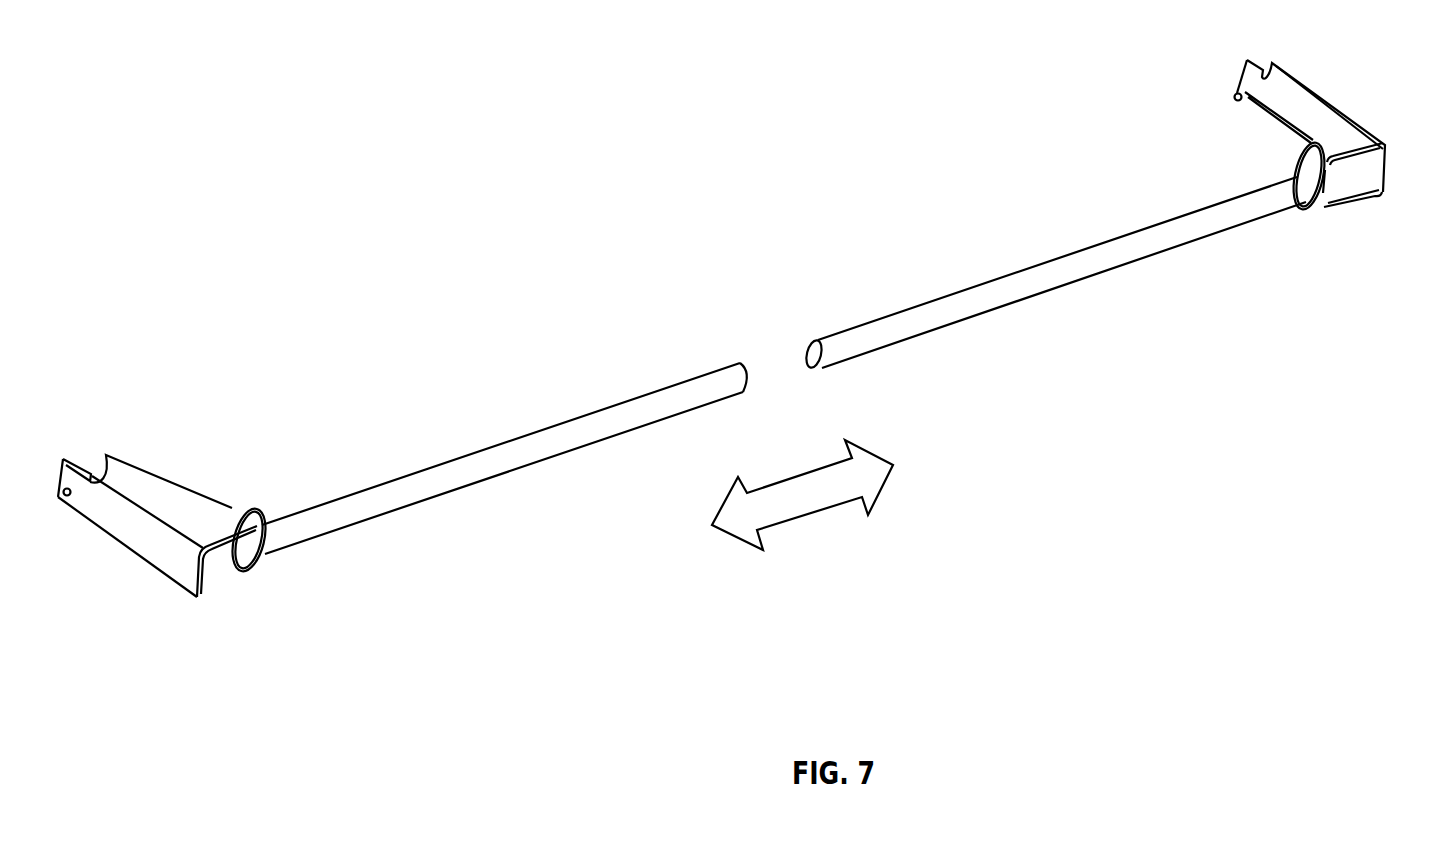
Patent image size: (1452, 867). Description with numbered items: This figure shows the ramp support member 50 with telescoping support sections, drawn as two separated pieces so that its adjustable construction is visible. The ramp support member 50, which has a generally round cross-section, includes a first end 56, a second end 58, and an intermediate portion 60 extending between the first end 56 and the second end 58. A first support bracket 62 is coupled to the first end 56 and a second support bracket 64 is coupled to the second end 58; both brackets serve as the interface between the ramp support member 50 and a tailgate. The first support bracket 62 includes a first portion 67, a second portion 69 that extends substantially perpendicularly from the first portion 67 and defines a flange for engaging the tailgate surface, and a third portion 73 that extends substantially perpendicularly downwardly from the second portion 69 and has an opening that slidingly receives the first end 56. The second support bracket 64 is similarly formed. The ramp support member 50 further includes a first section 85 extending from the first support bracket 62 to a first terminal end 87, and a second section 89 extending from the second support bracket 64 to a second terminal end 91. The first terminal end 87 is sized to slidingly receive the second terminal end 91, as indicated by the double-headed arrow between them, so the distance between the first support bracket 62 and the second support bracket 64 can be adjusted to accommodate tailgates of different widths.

The ramp support member 50 is at (1040, 328).
The first end 56 is at (233, 553).
The second end 58 is at (1343, 175).
The intermediate portion 60 is at (695, 392).
The first support bracket 62 is at (128, 549).
The second support bracket 64 is at (1298, 77).
The first portion 67 is at (180, 568).
The second portion 69 is at (147, 471).
The third portion 73 is at (253, 513).
The first section 85 is at (473, 467).
The first terminal end 87 is at (740, 363).
The second section 89 is at (1142, 240).
The second terminal end 91 is at (823, 355).